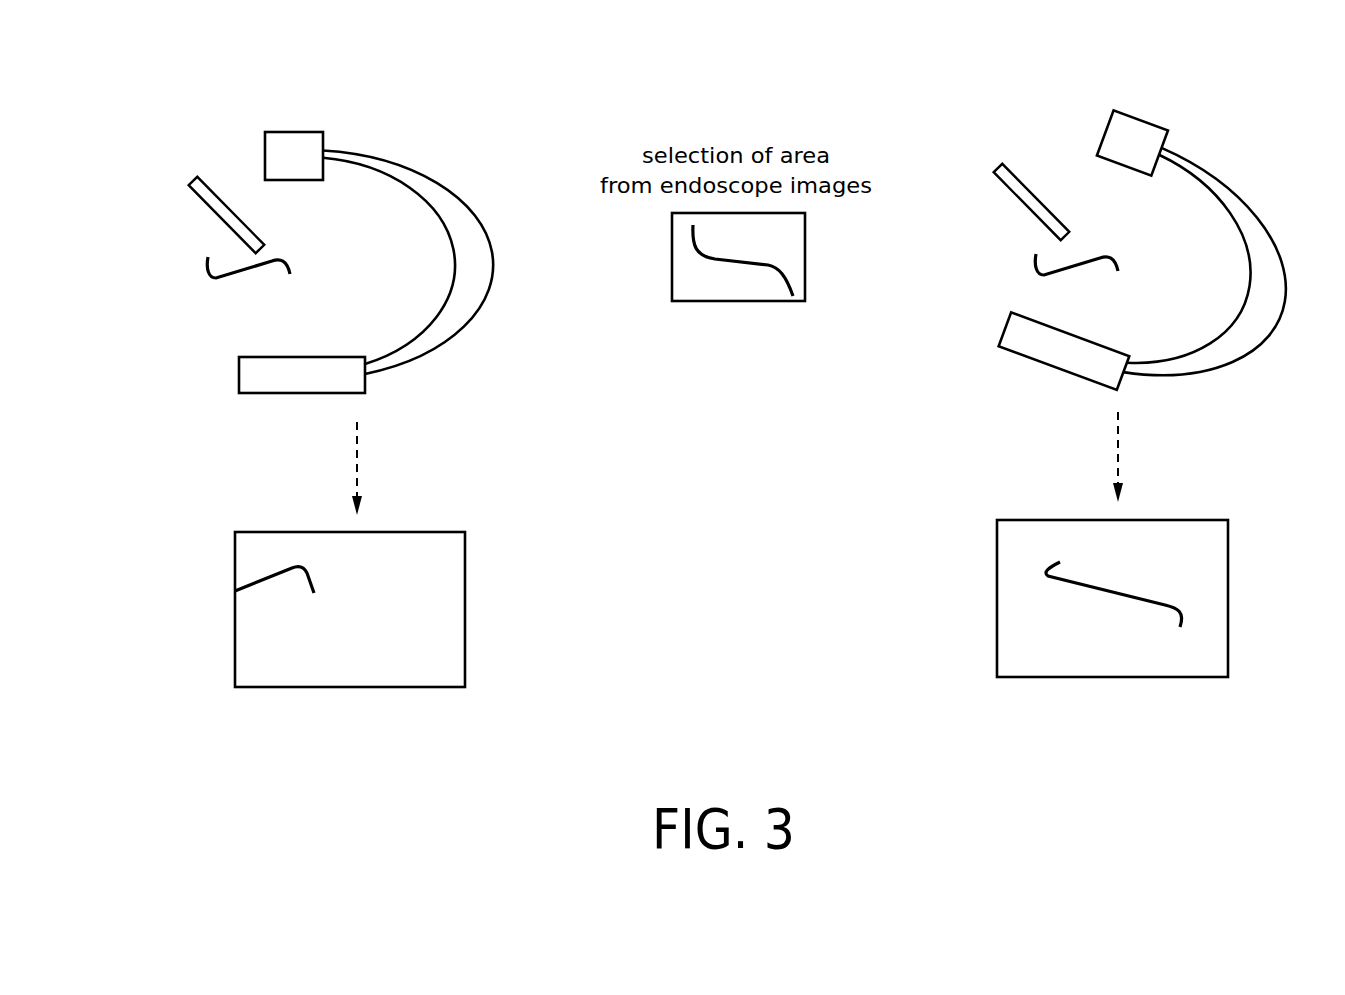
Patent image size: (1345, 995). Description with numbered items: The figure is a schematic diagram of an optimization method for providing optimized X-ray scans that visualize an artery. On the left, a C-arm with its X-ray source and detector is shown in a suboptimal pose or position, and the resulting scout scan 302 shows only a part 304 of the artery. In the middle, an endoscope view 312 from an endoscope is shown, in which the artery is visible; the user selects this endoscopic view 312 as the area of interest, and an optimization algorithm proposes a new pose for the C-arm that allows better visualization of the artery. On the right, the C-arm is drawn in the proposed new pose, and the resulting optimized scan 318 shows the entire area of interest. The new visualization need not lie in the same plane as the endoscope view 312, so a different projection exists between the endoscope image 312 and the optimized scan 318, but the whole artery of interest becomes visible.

The scout scan 302 is at (214, 517).
The part of artery 304 is at (318, 582).
The endoscope view 312 is at (672, 264).
The optimized scan 318 is at (997, 606).